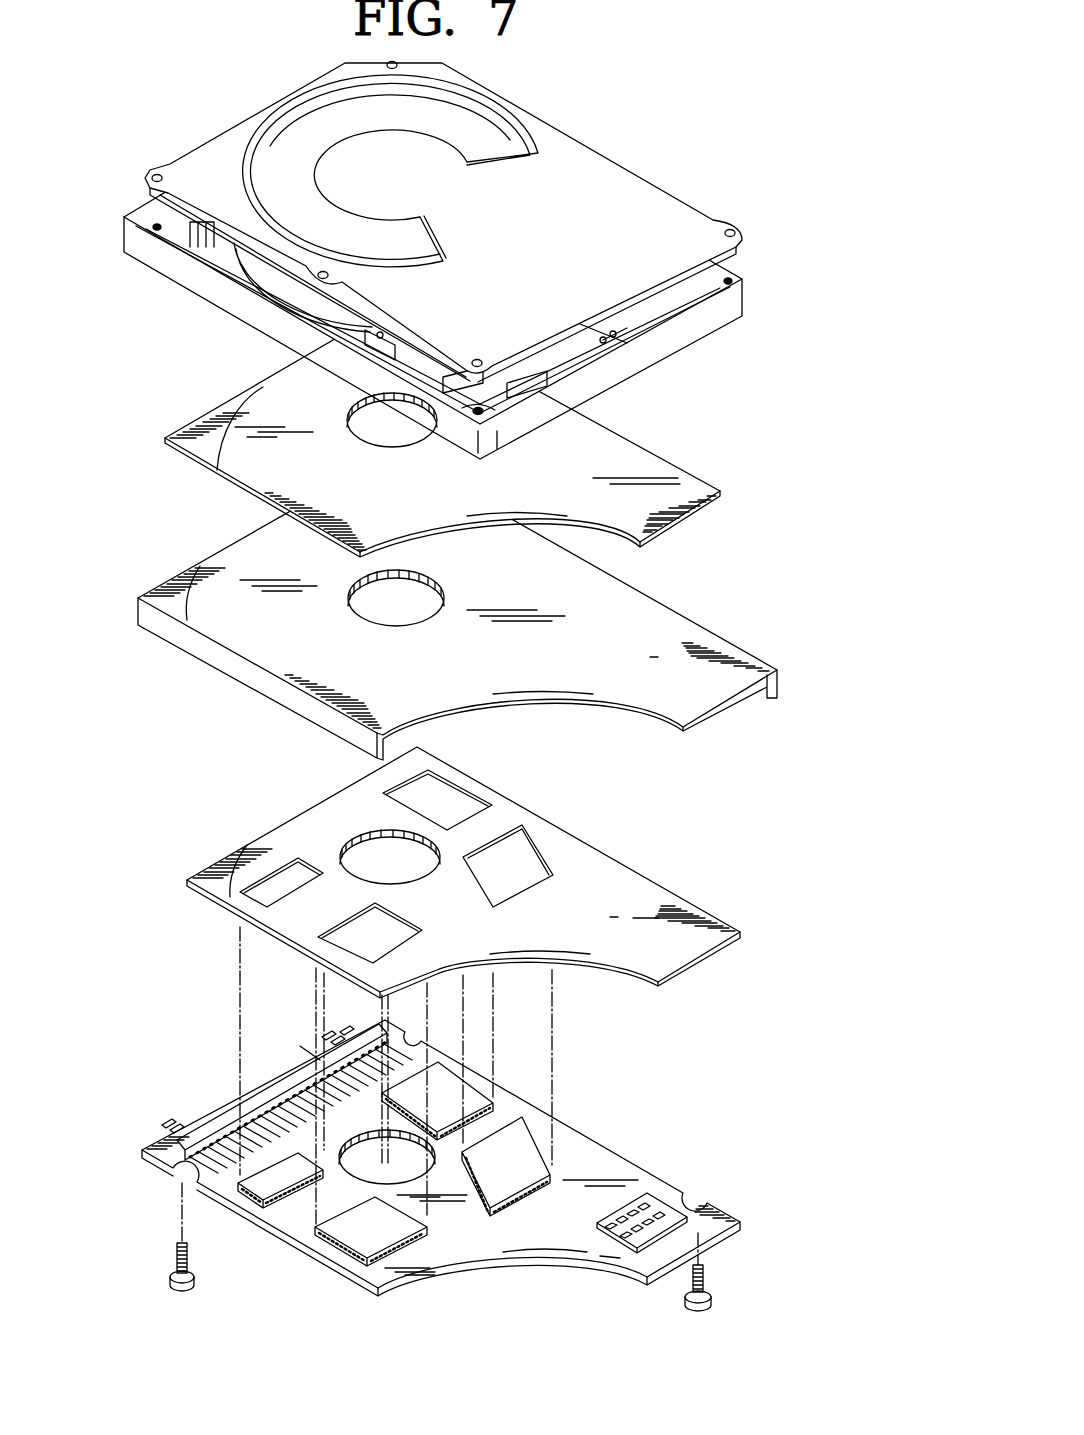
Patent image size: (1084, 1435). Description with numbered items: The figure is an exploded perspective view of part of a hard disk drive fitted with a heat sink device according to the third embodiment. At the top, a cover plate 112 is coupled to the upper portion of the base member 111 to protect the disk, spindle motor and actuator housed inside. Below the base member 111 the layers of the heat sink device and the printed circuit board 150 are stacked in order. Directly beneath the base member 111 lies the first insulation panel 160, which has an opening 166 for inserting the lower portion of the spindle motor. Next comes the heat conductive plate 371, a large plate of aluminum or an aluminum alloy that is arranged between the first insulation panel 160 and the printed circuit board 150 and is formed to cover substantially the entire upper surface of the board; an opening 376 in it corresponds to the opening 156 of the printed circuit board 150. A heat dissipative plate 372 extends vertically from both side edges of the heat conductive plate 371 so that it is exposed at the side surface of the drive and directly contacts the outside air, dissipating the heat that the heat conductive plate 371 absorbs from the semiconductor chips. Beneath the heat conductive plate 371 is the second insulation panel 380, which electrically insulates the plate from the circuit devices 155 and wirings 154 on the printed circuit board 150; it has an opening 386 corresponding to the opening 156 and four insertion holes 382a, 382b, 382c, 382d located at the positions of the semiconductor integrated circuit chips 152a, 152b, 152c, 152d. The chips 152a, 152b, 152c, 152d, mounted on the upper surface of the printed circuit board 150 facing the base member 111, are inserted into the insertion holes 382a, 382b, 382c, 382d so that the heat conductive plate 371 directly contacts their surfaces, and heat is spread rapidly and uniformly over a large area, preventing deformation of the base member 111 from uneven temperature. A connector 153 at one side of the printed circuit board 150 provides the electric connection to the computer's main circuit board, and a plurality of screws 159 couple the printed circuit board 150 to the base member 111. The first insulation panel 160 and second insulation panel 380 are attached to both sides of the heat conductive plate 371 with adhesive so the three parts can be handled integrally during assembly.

The base member 111 is at (737, 302).
The cover plate 112 is at (617, 172).
The printed circuit board 150 is at (628, 1175).
The semiconductor integrated circuit chip 152a is at (255, 1187).
The semiconductor integrated circuit chip 152b is at (343, 1233).
The semiconductor integrated circuit chip 152c is at (447, 1088).
The semiconductor integrated circuit chip 152d is at (523, 1150).
The connector 153 is at (285, 1088).
The wirings 154 is at (252, 1110).
The circuit devices 155 is at (210, 1123).
The opening 156 is at (317, 1057).
The screws 159 is at (703, 1285).
The first insulation panel 160 is at (607, 452).
The opening 166 is at (270, 383).
The heat conductive plate 371 is at (657, 620).
The heat dissipative plate 372 is at (197, 643).
The opening 376 is at (350, 590).
The second insulation panel 380 is at (628, 892).
The insertion hole 382a is at (288, 882).
The insertion hole 382b is at (393, 935).
The insertion hole 382c is at (445, 798).
The insertion hole 382d is at (522, 857).
The opening 386 is at (362, 830).